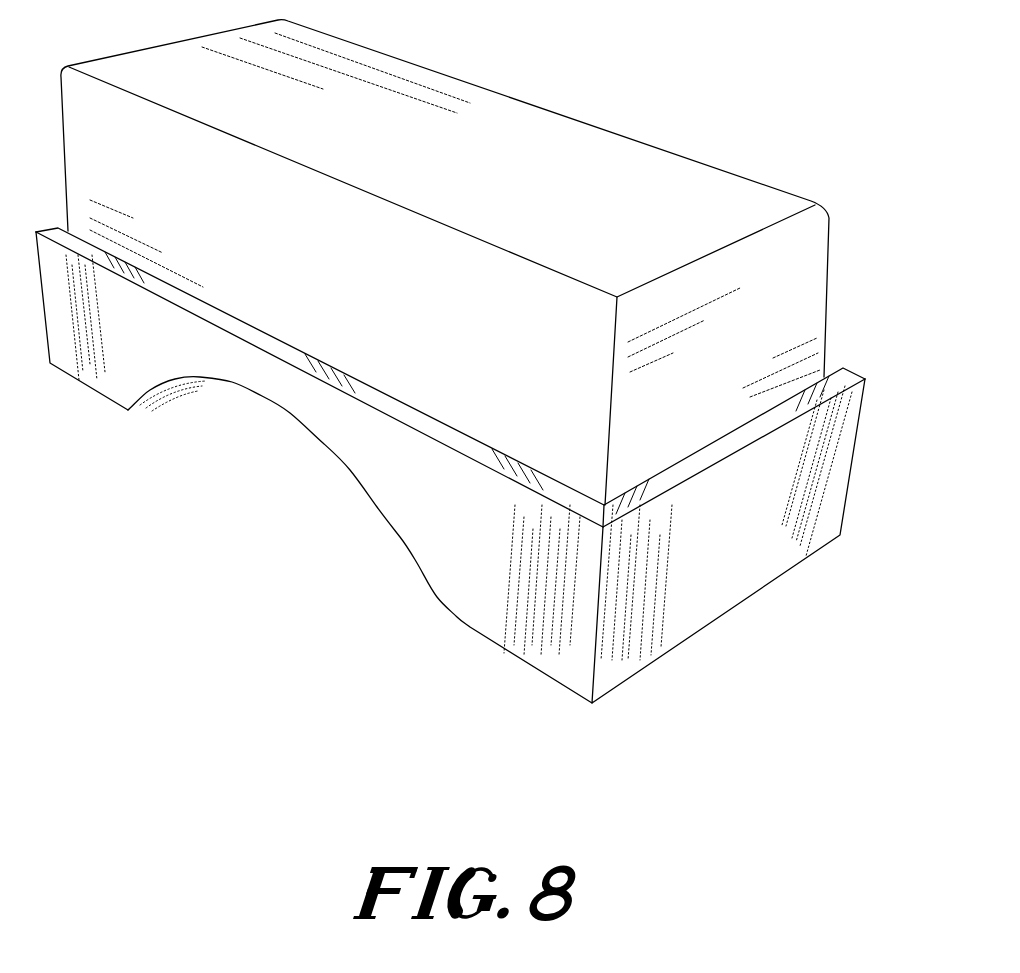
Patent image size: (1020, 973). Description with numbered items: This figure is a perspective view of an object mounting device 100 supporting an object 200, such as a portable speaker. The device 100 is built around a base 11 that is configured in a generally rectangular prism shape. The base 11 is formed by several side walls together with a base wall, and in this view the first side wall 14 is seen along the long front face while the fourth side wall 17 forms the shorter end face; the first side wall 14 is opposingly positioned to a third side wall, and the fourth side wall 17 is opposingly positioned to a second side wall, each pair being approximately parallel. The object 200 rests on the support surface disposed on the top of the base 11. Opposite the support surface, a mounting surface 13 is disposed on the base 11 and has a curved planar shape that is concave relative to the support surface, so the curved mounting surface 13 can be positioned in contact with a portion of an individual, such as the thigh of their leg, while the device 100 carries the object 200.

The object mounting device 100 is at (473, 508).
The object 200 is at (505, 160).
The base 11 is at (865, 379).
The mounting surface 13 is at (178, 383).
The first side wall 14 is at (462, 486).
The fourth side wall 17 is at (708, 538).